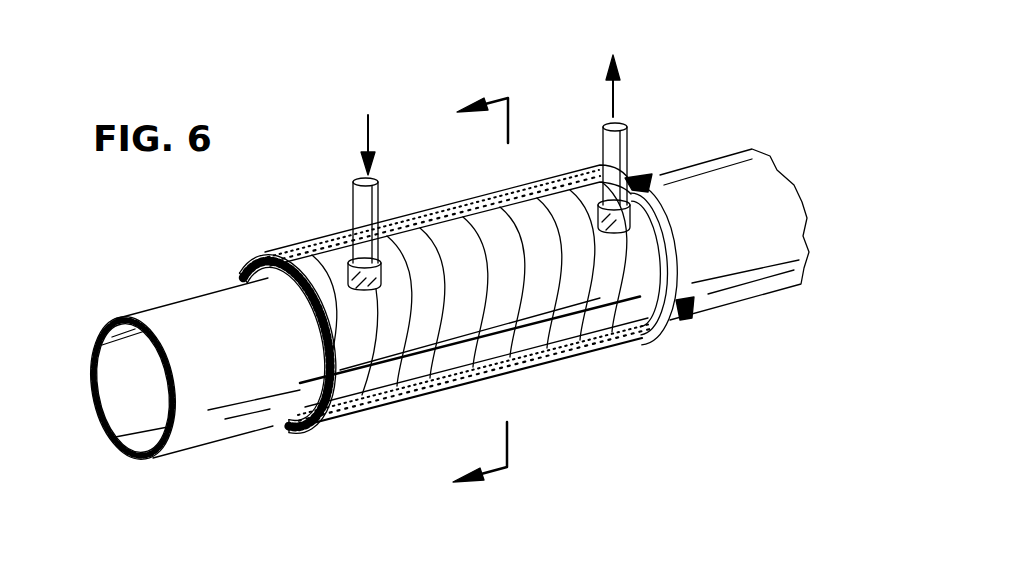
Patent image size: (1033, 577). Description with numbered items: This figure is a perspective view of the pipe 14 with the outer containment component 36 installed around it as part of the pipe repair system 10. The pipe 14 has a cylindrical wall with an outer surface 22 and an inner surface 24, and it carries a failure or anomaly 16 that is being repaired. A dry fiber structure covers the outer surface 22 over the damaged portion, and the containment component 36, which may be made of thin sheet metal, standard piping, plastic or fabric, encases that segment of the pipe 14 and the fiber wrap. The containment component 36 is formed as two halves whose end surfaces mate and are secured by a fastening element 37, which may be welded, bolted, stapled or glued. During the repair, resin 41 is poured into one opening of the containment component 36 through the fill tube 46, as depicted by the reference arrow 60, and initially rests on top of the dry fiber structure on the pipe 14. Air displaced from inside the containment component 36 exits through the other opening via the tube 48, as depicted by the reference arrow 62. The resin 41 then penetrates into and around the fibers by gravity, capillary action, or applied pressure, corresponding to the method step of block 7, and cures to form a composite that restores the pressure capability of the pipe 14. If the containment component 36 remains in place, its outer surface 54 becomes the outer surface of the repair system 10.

The repair system 10 is at (722, 82).
The pipe 14 is at (240, 450).
The failure or anomaly 16 is at (498, 292).
The outer surface 22 is at (187, 313).
The inner surface 24 is at (111, 378).
The containment component 36 is at (541, 163).
The fastening element 37 is at (633, 350).
The resin 41 is at (322, 238).
The fill tube 46 is at (380, 222).
The tube 48 is at (628, 152).
The outer surface 54 is at (410, 373).
The reference arrow 60 is at (364, 135).
The reference arrow 62 is at (616, 100).
The block 7 is at (491, 281).